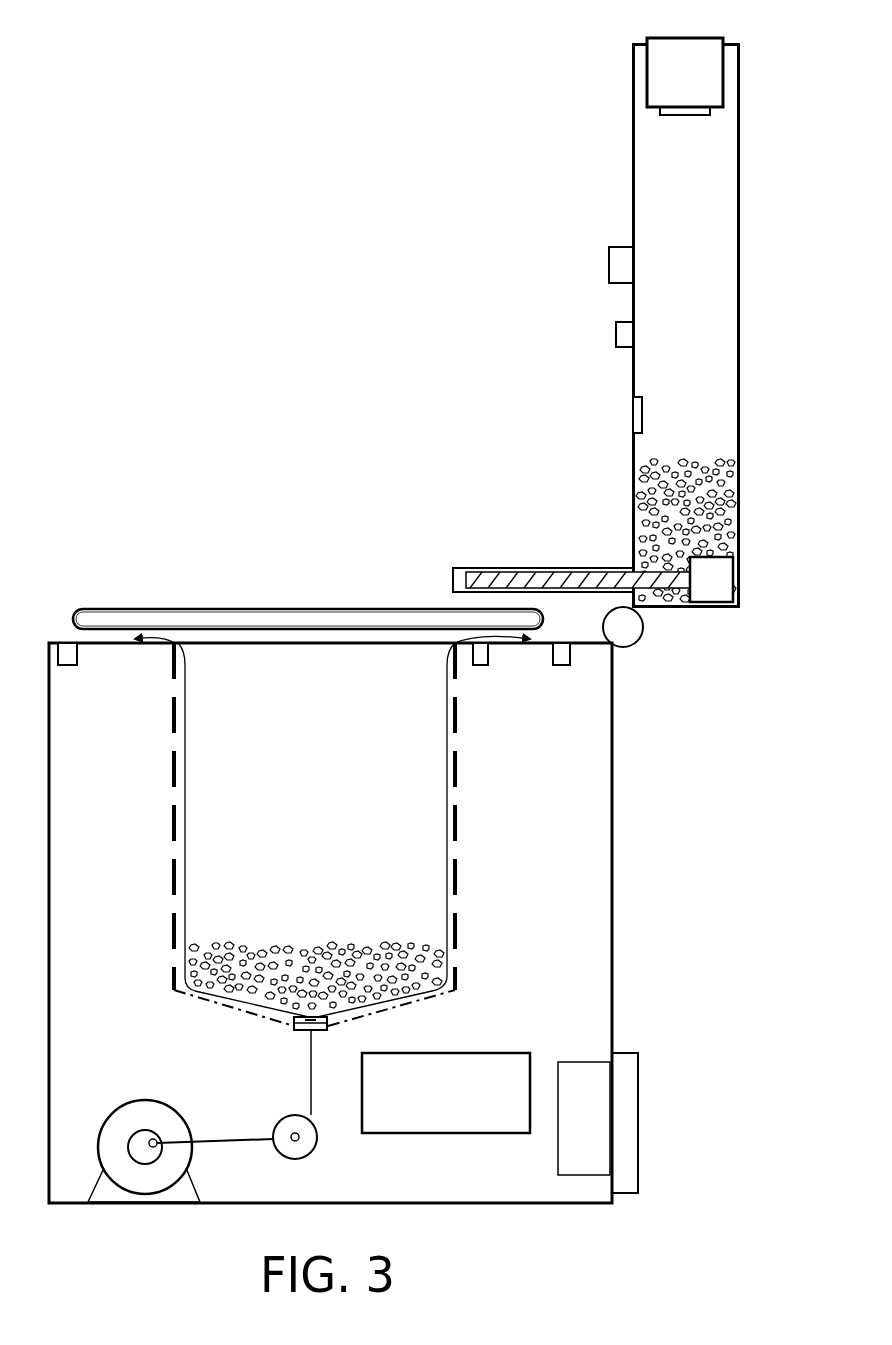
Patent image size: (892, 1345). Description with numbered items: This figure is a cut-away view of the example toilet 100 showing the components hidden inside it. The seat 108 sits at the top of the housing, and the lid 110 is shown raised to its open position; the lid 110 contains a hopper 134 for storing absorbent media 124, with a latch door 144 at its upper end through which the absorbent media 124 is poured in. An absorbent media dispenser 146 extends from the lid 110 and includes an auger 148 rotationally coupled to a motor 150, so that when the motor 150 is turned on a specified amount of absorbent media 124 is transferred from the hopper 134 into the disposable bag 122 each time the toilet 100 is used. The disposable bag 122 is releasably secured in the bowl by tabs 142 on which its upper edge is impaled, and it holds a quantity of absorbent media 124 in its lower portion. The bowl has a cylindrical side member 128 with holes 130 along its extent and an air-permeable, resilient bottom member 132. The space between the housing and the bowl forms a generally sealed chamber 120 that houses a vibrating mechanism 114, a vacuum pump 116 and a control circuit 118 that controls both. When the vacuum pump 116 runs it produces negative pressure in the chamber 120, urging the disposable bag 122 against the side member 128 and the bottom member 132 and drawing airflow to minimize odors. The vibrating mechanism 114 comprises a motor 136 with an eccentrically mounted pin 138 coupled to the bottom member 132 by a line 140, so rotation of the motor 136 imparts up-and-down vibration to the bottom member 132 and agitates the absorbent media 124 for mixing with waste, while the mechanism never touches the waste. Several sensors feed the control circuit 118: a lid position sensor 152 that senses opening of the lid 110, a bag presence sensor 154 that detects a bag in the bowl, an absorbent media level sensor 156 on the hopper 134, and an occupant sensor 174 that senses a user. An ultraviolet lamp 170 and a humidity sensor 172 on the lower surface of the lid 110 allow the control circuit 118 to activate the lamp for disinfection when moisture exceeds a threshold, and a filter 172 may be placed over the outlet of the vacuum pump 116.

The toilet 100 is at (338, 395).
The seat 108 is at (162, 609).
The lid 110 is at (741, 268).
The vibrating mechanism 114 is at (234, 1084).
The vacuum pump 116 is at (562, 1062).
The control circuit 118 is at (440, 1053).
The chamber 120 is at (550, 914).
The disposable bag 122 is at (186, 760).
The absorbent media 124 is at (660, 468).
The side member 128 is at (172, 776).
The holes 130 is at (168, 855).
The bottom member 132 is at (242, 1010).
The hopper 134 is at (703, 309).
The motor 136 is at (102, 1134).
The eccentrically mounted pin 138 is at (150, 1144).
The line 140 is at (226, 1148).
The tabs 142 is at (526, 640).
The latch door 144 is at (672, 38).
The absorbent media dispenser 146 is at (540, 568).
The auger 148 is at (455, 578).
The motor 150 is at (733, 595).
The lid position sensor 152 is at (570, 657).
The bag presence sensor 154 is at (488, 660).
The absorbent media level sensor 156 is at (642, 412).
The ultraviolet lamp 170 is at (609, 268).
The humidity sensor 172 is at (616, 334).
The occupant sensor 174 is at (79, 655).